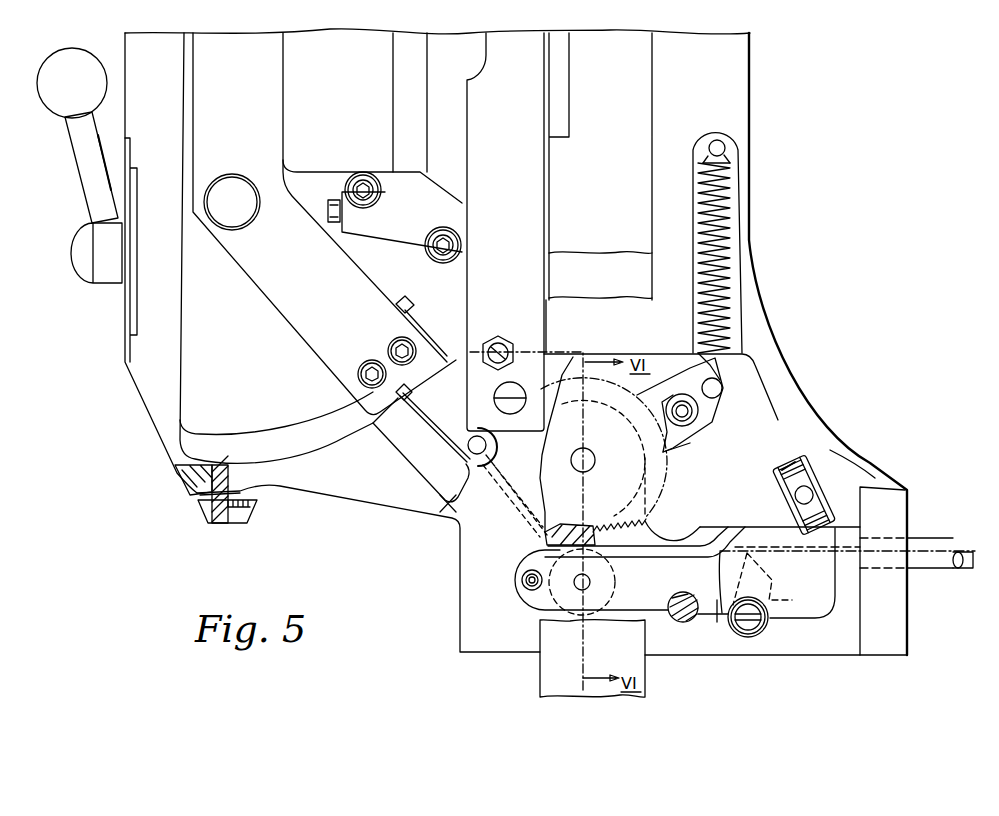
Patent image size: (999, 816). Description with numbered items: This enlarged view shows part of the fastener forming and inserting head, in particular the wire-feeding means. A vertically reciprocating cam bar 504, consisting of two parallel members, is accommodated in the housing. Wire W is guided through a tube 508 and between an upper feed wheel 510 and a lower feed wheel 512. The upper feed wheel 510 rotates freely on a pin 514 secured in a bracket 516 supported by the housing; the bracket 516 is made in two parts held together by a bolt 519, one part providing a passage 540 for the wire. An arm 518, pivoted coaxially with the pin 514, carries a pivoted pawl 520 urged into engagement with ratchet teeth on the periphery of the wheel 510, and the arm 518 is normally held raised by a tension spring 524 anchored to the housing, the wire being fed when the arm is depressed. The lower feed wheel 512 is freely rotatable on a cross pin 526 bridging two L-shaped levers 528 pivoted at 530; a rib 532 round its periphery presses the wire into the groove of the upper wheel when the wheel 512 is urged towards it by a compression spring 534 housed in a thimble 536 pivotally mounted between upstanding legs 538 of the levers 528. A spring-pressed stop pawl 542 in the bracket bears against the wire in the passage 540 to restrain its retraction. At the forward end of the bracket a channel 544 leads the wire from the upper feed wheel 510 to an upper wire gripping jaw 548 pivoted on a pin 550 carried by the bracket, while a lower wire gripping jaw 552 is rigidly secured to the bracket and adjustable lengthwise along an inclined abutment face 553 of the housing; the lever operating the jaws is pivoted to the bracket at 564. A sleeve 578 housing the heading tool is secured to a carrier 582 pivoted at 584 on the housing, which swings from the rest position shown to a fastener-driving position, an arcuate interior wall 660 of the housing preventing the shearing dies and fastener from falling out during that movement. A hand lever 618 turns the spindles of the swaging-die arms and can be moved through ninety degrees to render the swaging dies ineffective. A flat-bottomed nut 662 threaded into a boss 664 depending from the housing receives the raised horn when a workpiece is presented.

The cam bar 504 is at (526, 652).
The tube 508 is at (935, 566).
The upper feed wheel 510 is at (634, 504).
The lower feed wheel 512 is at (610, 565).
The pin 514 is at (600, 456).
The bracket 516 is at (563, 373).
The arm 518 is at (712, 417).
The bolt 519 is at (678, 623).
The pawl 520 is at (673, 435).
The tension spring 524 is at (727, 200).
The cross pin 526 is at (590, 586).
The L-shaped levers 528 is at (740, 628).
The pivot 530 is at (527, 588).
The rib 532 is at (536, 605).
The compression spring 534 is at (783, 493).
The thimble 536 is at (783, 472).
The upstanding legs 538 is at (822, 483).
The passage 540 is at (812, 553).
The stop pawl 542 is at (783, 581).
The channel 544 is at (520, 515).
The upper wire gripping jaw 548 is at (458, 386).
The pin 550 is at (477, 434).
The lower wire gripping jaw 552 is at (434, 455).
The inclined abutment face 553 is at (447, 504).
The pivot 564 is at (517, 390).
The sleeve 578 is at (402, 232).
The carrier 582 is at (250, 131).
The pivot 584 is at (249, 215).
The hand lever 618 is at (90, 184).
The arcuate interior wall 660 is at (303, 452).
The flat-bottomed nut 662 is at (203, 503).
The boss 664 is at (212, 480).